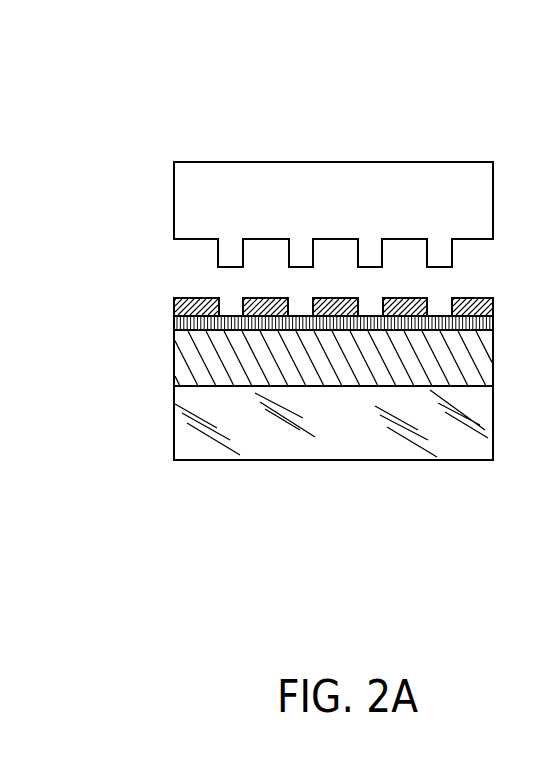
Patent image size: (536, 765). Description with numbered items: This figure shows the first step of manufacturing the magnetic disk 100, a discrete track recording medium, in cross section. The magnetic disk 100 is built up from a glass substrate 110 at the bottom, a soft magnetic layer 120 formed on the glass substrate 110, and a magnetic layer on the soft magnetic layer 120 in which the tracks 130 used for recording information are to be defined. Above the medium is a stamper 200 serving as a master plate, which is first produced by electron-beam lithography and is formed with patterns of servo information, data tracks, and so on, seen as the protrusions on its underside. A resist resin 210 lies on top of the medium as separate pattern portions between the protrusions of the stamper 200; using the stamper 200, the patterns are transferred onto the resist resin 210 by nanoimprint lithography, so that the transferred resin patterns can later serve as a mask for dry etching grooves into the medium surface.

The magnetic disk 100 is at (269, 446).
The glass substrate 110 is at (352, 453).
The soft magnetic layer 120 is at (185, 369).
The tracks 130 is at (174, 322).
The stamper 200 is at (330, 172).
The resist resin 210 is at (174, 300).